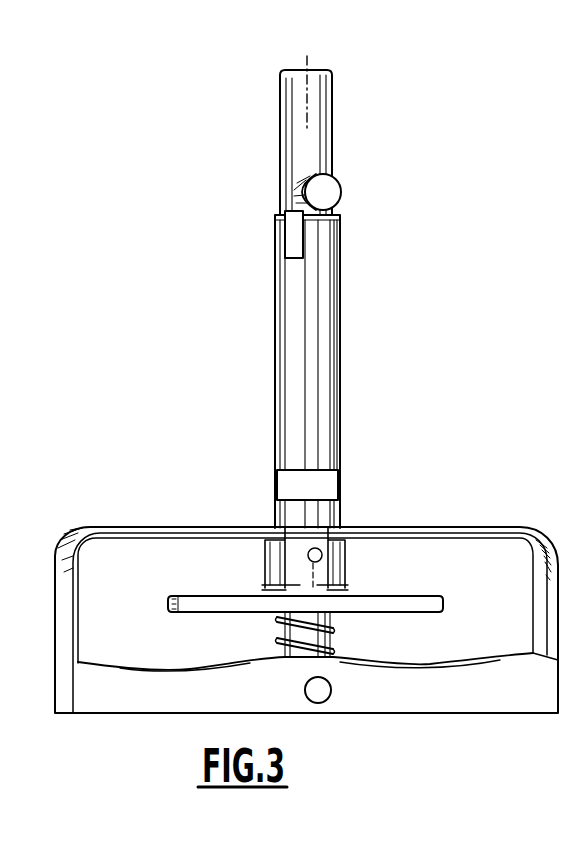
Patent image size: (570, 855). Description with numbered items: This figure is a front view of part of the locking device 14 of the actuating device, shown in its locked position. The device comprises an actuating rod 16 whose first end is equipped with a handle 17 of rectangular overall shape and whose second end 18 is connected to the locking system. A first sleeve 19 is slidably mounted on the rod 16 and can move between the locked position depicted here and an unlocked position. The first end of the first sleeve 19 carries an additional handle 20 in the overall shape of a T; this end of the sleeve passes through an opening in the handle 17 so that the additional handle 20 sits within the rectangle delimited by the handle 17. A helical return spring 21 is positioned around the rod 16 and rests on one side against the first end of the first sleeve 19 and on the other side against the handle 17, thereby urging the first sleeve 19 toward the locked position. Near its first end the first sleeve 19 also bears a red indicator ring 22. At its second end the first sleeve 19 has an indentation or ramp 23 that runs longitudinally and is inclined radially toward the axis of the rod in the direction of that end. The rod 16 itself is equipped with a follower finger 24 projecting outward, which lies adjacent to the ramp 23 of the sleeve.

The locking device 14 is at (237, 177).
The actuating rod 16 is at (331, 144).
The handle 17 is at (505, 690).
The second end 18 is at (340, 88).
The first sleeve 19 is at (313, 357).
The additional handle 20 is at (383, 595).
The helical return spring 21 is at (333, 630).
The red indicator ring 22 is at (288, 485).
The ramp 23 is at (295, 235).
The follower finger 24 is at (331, 191).